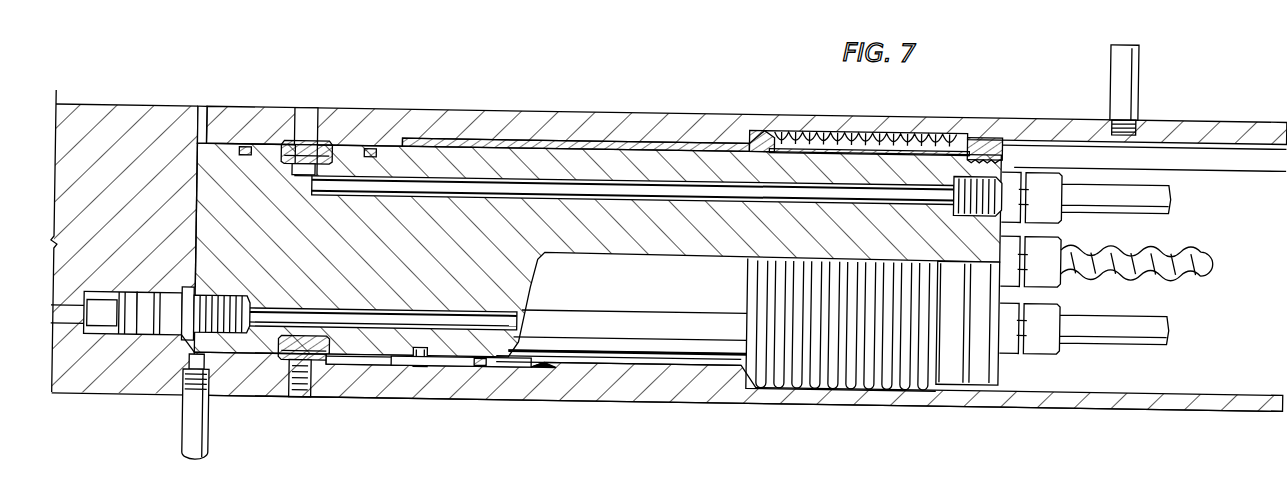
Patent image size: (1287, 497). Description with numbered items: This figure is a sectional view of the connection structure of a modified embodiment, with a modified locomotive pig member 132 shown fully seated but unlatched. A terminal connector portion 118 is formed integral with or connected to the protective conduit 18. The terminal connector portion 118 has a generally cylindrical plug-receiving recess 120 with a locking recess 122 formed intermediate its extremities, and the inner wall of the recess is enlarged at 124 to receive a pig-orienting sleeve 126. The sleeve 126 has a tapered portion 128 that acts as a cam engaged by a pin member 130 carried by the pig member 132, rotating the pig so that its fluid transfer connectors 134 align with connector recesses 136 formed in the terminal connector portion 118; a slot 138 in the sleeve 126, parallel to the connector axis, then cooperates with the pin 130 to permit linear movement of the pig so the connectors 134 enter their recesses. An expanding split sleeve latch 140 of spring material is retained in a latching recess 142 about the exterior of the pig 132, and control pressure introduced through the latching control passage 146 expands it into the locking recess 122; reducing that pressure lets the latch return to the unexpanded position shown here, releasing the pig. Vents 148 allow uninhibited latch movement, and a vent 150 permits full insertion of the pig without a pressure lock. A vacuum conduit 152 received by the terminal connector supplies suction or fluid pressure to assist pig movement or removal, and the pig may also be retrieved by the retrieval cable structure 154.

The protective conduit 18 is at (1236, 108).
The terminal connector portion 118 is at (437, 104).
The plug-receiving recess 120 is at (371, 143).
The locking recess 122 is at (737, 424).
The enlarged inner wall portion 124 is at (660, 368).
The pig-orienting sleeve 126 is at (565, 131).
The tapered portion 128 is at (540, 358).
The pin member 130 is at (424, 361).
The locomotive pig member 132 is at (397, 345).
The fluid transfer connectors 134 is at (173, 328).
The connector recesses 136 is at (112, 328).
The slot 138 is at (507, 360).
The expanding split sleeve latch 140 is at (318, 366).
The latching recess 142 is at (383, 486).
The latching control passage 146 is at (706, 172).
The vents 148 is at (300, 137).
The vent 150 is at (205, 104).
The vacuum conduit 152 is at (196, 437).
The retrieval cable structure 154 is at (1192, 243).